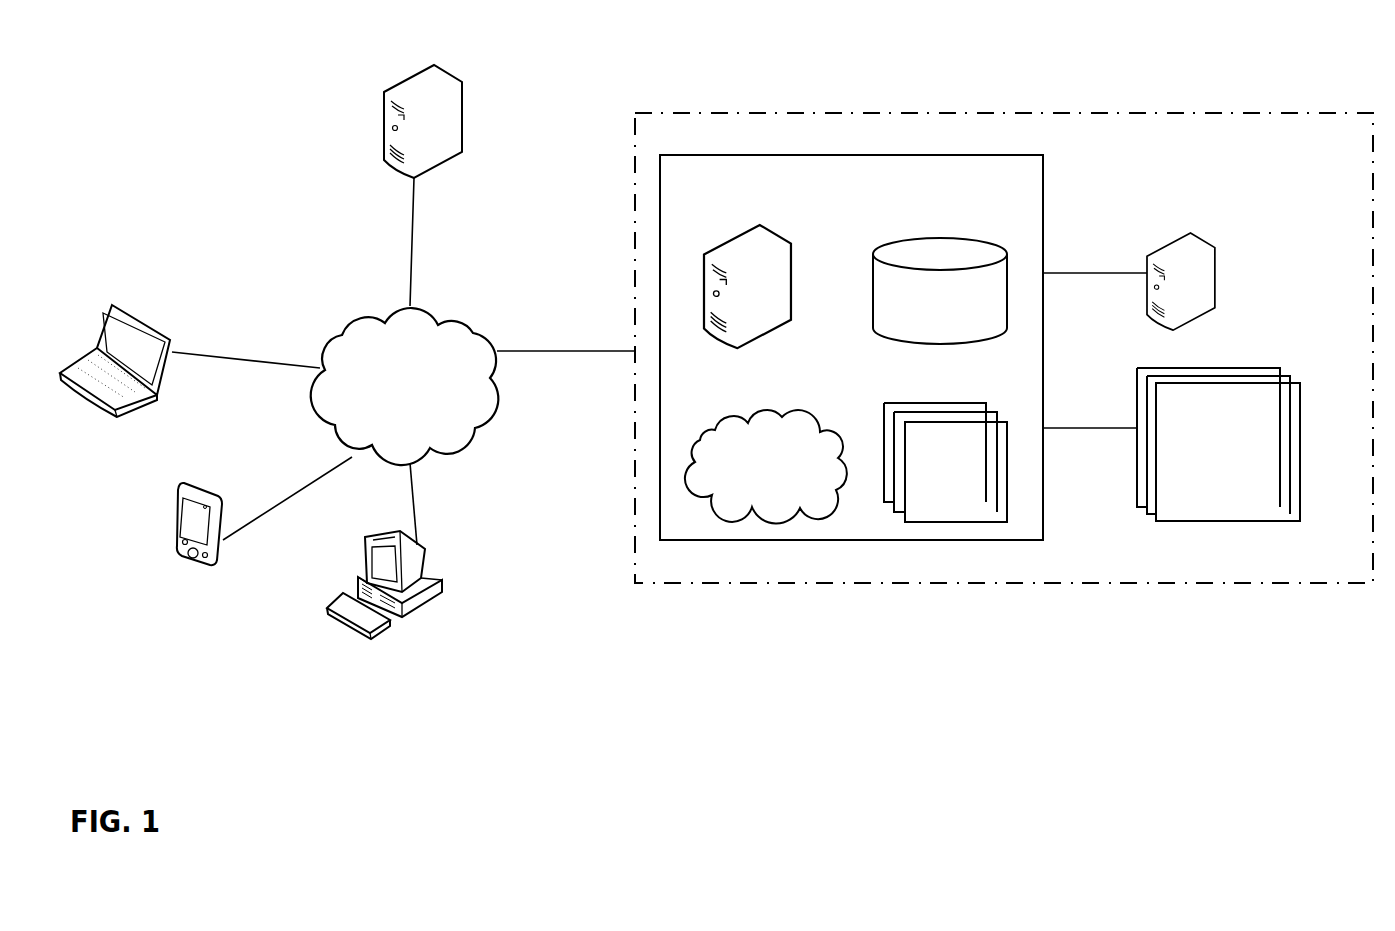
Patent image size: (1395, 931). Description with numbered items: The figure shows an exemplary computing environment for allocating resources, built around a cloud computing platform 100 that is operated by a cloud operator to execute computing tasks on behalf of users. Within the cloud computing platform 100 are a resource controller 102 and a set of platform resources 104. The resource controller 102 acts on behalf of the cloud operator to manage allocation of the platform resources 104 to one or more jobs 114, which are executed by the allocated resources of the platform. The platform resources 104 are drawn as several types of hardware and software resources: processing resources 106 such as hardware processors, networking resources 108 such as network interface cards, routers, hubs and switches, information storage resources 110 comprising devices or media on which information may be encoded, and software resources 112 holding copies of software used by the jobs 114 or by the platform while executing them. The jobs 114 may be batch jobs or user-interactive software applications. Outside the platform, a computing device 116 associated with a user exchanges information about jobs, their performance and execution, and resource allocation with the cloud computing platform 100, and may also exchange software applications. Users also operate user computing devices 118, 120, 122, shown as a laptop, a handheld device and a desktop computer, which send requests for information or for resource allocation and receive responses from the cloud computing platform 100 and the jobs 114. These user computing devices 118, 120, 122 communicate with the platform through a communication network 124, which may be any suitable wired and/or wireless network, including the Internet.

The cloud computing platform 100 is at (1004, 348).
The resource controller 102 is at (1213, 243).
The platform resources 104 is at (851, 347).
The processing resources 106 is at (790, 242).
The networking resources 108 is at (783, 410).
The information storage resources 110 is at (967, 238).
The software resources 112 is at (927, 400).
The jobs 114 is at (1218, 444).
The computing device 116 is at (460, 80).
The user computing device 118 is at (143, 320).
The user computing device 120 is at (222, 500).
The user computing device 122 is at (440, 583).
The communication network 124 is at (405, 386).